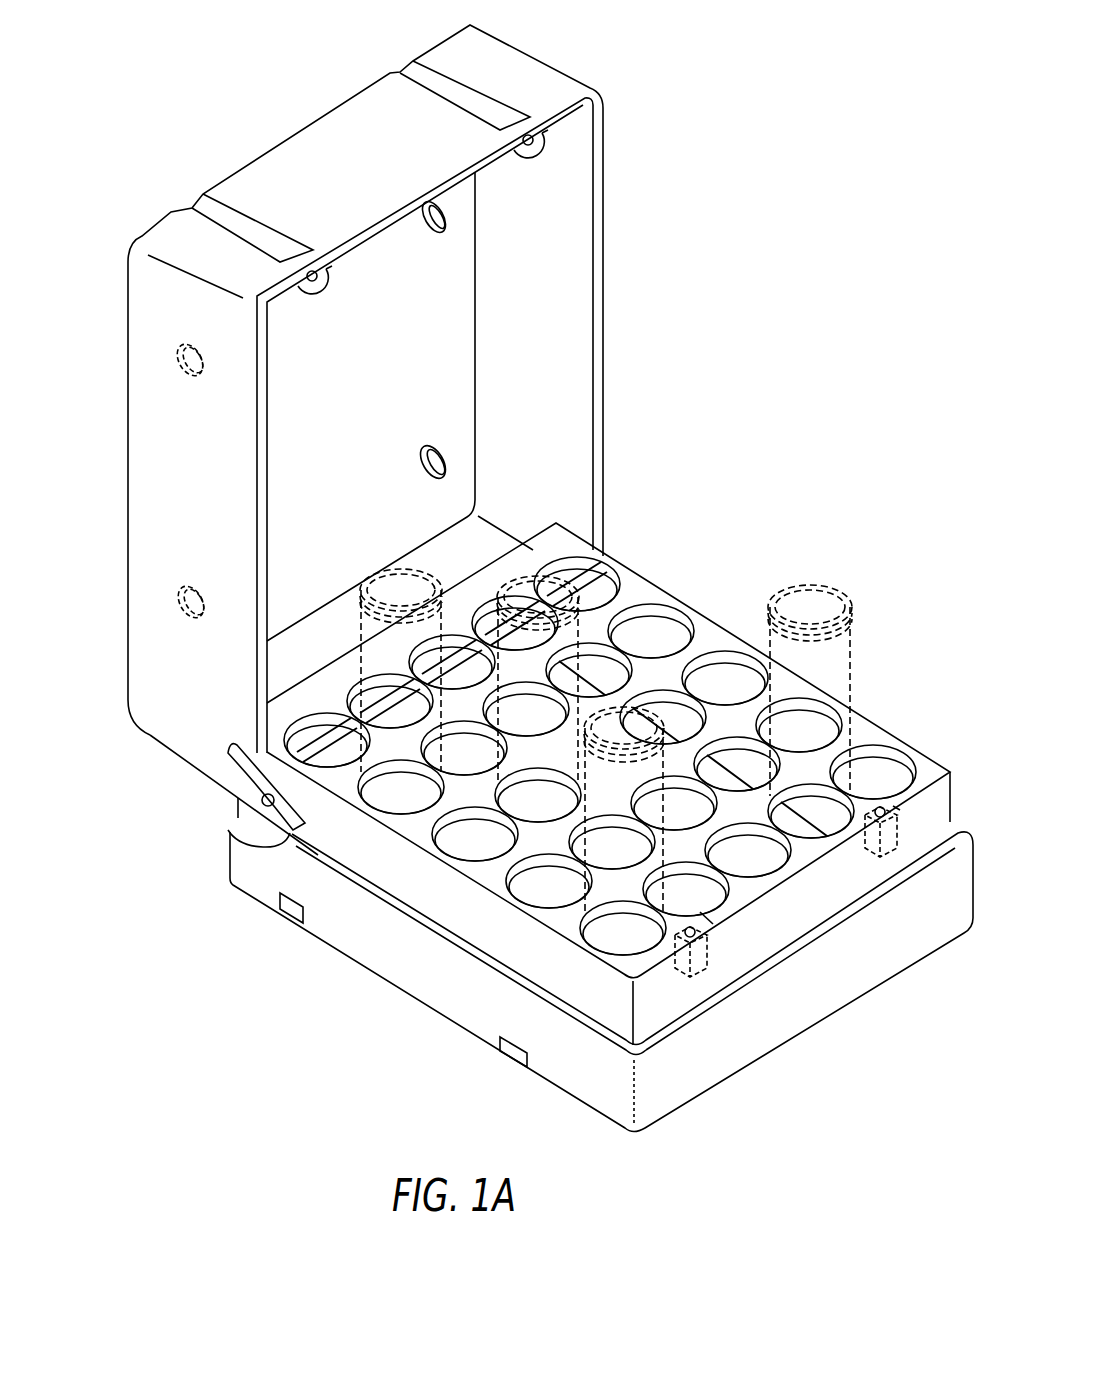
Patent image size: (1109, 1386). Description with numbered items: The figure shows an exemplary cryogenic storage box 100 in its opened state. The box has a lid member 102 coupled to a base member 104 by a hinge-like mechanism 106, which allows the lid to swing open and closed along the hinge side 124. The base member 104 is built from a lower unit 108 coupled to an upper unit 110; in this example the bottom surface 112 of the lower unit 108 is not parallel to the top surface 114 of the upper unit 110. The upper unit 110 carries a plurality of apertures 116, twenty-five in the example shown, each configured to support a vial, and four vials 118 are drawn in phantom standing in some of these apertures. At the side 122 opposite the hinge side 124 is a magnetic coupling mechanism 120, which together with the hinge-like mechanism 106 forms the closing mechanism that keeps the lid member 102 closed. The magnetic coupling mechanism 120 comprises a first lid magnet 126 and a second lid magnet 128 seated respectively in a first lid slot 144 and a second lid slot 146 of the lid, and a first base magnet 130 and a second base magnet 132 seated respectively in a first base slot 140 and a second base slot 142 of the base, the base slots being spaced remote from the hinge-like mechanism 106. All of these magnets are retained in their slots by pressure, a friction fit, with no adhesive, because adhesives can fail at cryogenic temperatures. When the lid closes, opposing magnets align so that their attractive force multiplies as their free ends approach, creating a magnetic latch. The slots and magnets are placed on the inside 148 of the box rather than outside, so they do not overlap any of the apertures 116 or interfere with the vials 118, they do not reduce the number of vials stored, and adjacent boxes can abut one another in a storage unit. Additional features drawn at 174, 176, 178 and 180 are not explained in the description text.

The cryogenic storage box 100 is at (335, 1104).
The lid member 102 is at (614, 348).
The base member 104 is at (621, 1075).
The hinge-like mechanism 106 is at (236, 817).
The lower unit 108 is at (395, 980).
The upper unit 110 is at (418, 908).
The bottom surface 112 is at (425, 1024).
The top surface 114 is at (117, 326).
The apertures 116 is at (750, 850).
The vials 118 is at (848, 672).
The magnetic coupling mechanism 120 is at (294, 298).
The side 122 is at (755, 1095).
The hinge side 124 is at (174, 779).
The first lid magnet 126 is at (318, 285).
The second lid magnet 128 is at (536, 145).
The first base magnet 130 is at (713, 924).
The second base magnet 132 is at (900, 810).
The first base slot 140 is at (700, 988).
The second base slot 142 is at (890, 862).
The first lid slot 144 is at (336, 272).
The second lid slot 146 is at (460, 213).
The inside 148 is at (304, 580).
The opening 174 is at (168, 363).
The notch 176 is at (512, 165).
The opening 178 is at (172, 606).
The opening 180 is at (458, 452).